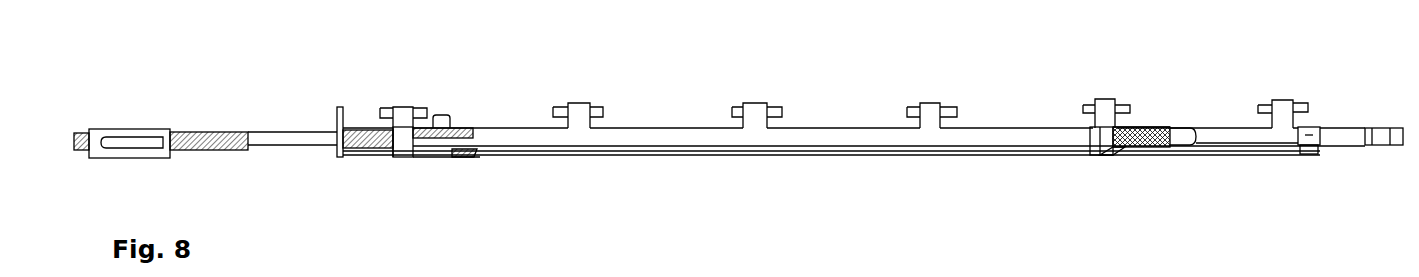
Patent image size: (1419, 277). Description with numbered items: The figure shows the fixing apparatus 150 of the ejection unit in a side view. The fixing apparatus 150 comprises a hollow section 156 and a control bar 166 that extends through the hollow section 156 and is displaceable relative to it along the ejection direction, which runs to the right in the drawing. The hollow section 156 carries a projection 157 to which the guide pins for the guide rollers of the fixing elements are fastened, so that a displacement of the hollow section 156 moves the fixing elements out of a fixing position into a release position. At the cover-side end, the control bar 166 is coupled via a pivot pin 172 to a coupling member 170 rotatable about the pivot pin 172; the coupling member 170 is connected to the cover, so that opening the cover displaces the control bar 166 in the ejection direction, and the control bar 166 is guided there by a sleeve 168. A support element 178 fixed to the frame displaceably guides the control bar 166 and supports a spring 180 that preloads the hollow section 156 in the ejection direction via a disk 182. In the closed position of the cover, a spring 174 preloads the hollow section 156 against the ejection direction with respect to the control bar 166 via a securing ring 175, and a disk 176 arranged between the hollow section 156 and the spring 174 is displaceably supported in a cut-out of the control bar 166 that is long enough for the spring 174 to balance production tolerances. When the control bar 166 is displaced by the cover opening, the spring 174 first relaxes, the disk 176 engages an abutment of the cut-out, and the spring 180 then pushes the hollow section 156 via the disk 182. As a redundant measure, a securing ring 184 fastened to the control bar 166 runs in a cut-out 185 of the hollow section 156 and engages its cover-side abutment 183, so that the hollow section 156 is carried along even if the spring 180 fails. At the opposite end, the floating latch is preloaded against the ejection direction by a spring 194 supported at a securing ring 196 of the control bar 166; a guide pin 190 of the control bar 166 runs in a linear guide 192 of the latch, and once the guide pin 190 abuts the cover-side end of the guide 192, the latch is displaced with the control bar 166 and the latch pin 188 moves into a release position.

The fixing apparatus 150 is at (1250, 60).
The hollow section 156 is at (540, 137).
The projection 157 is at (757, 120).
The control bar 166 is at (1100, 137).
The sleeve 168 is at (1170, 141).
The coupling member 170 is at (1372, 130).
The pivot pin 172 is at (1312, 153).
The spring 174 is at (1163, 149).
The securing ring 175 is at (1166, 129).
The disk 176 is at (1122, 151).
The support element 178 is at (344, 109).
The spring 180 is at (372, 152).
The disk 182 is at (392, 158).
The abutment 183 is at (455, 128).
The securing ring 184 is at (404, 156).
The cut-out 185 is at (438, 152).
The latch pin 188 is at (82, 139).
The guide pin 190 is at (128, 145).
The linear guide 192 is at (142, 136).
The spring 194 is at (202, 146).
The securing ring 196 is at (250, 133).